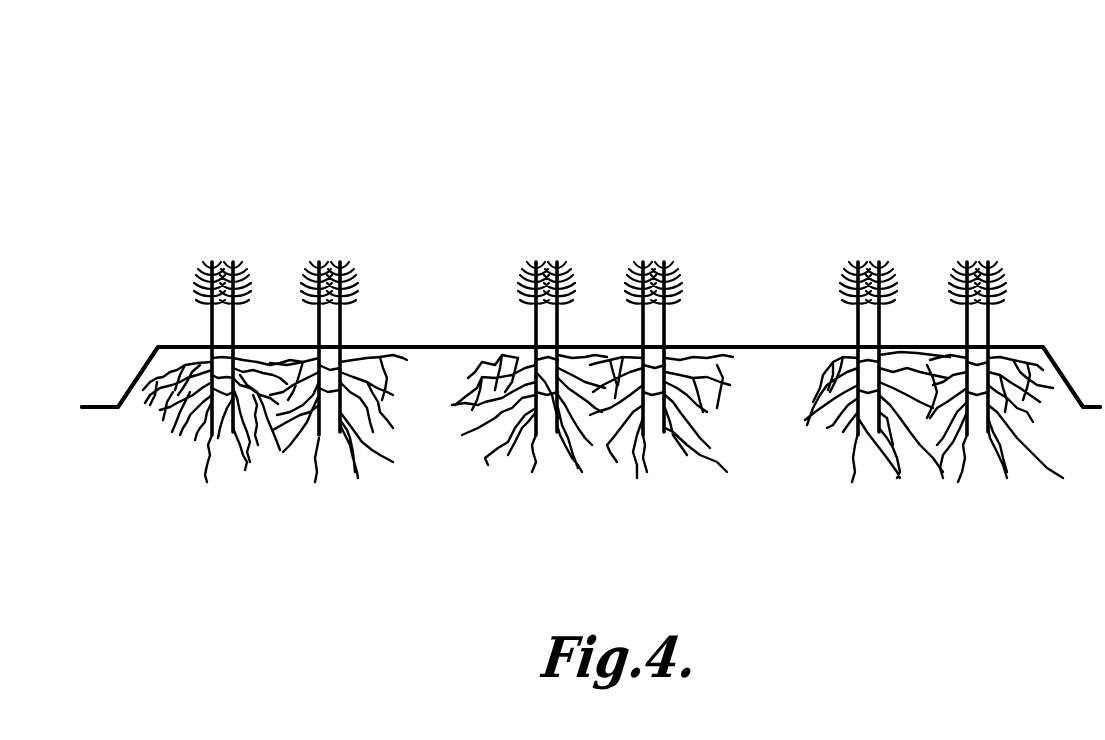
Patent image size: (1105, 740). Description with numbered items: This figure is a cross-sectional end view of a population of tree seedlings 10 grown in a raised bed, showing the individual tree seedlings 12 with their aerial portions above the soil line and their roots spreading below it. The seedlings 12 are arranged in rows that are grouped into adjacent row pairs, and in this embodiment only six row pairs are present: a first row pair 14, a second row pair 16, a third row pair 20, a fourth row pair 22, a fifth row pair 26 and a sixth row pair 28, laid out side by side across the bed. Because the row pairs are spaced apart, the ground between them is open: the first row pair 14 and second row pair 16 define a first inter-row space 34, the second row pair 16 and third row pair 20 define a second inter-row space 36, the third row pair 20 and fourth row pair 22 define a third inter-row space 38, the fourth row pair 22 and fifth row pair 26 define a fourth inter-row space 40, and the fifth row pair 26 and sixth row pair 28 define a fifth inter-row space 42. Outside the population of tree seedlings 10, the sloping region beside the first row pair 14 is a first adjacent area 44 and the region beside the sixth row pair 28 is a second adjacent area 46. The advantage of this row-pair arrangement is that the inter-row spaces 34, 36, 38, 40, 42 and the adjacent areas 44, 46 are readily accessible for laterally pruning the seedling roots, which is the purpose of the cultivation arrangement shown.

The population of tree seedlings 10 is at (208, 86).
The tree seedling 12 is at (182, 292).
The first row pair 14 is at (225, 251).
The second row pair 16 is at (335, 251).
The third row pair 20 is at (548, 251).
The fourth row pair 22 is at (655, 251).
The fifth row pair 26 is at (866, 251).
The sixth row pair 28 is at (980, 251).
The first inter-row space 34 is at (280, 190).
The second inter-row space 36 is at (448, 190).
The third inter-row space 38 is at (605, 190).
The fourth inter-row space 40 is at (758, 190).
The fifth inter-row space 42 is at (925, 190).
The first adjacent area 44 is at (139, 194).
The second adjacent area 46 is at (1058, 196).